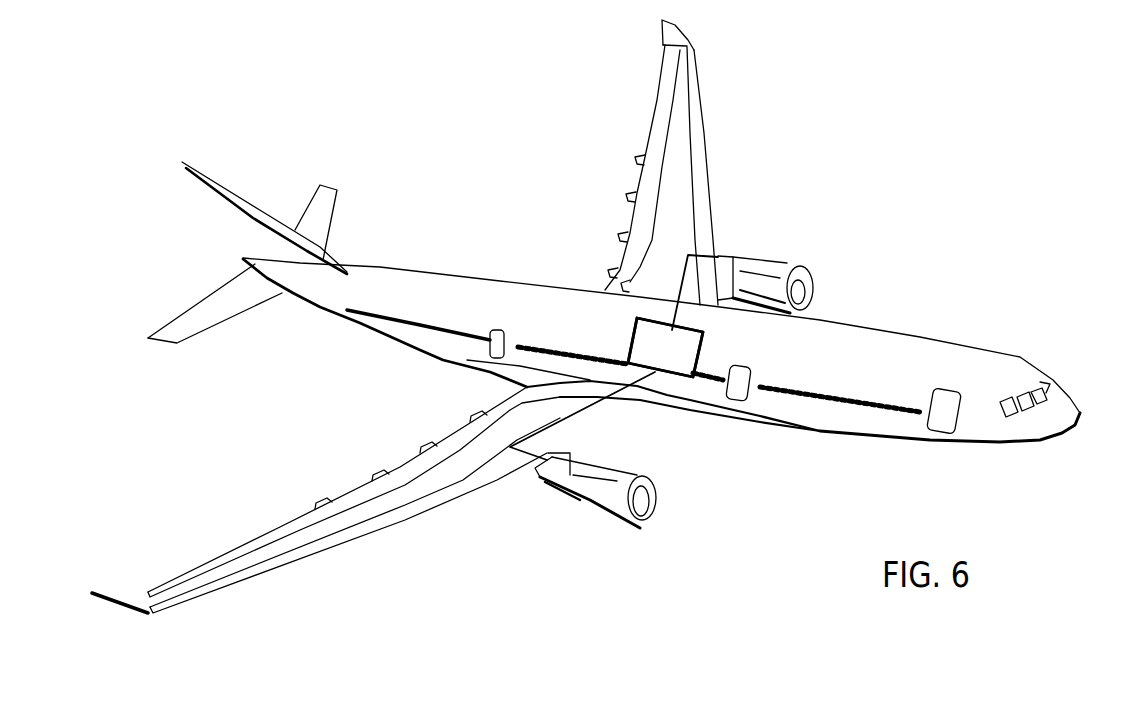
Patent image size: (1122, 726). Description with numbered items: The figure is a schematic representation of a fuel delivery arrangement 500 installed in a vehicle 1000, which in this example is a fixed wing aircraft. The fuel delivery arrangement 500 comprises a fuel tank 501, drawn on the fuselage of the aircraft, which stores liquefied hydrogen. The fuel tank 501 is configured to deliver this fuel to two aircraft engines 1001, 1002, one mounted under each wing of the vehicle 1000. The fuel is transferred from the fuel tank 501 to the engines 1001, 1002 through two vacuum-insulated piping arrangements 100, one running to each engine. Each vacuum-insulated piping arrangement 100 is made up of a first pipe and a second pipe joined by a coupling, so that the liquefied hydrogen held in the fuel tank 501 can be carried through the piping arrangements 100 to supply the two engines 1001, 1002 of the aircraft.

The vacuum-insulated piping arrangement 100 is at (673, 278).
The fuel delivery arrangement 500 is at (603, 315).
The fuel tank 501 is at (678, 362).
The vehicle 1000 is at (962, 370).
The aircraft engine 1001 is at (603, 508).
The aircraft engine 1002 is at (785, 275).